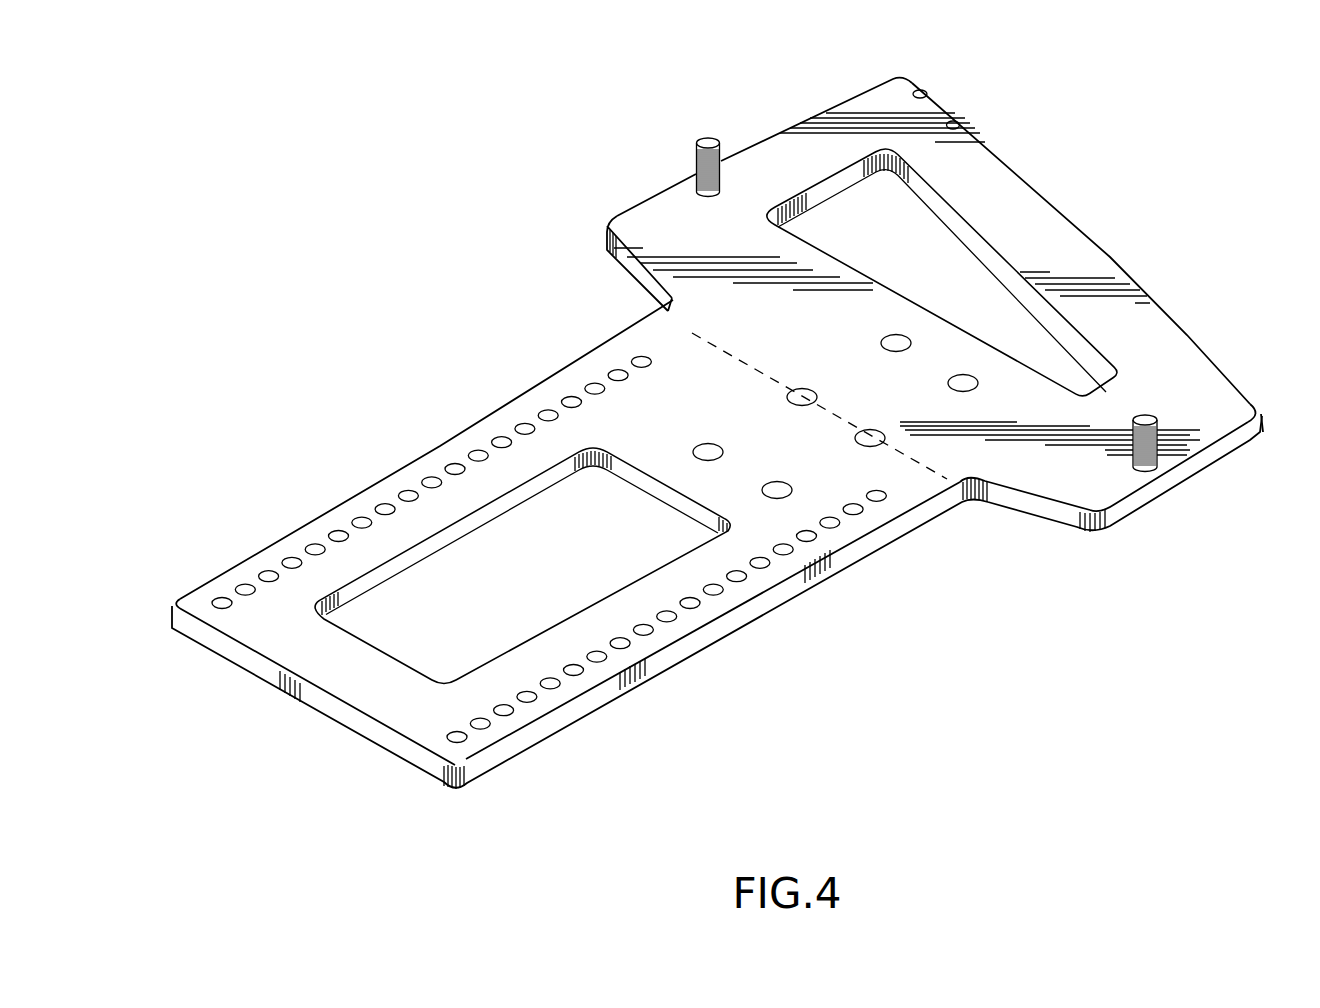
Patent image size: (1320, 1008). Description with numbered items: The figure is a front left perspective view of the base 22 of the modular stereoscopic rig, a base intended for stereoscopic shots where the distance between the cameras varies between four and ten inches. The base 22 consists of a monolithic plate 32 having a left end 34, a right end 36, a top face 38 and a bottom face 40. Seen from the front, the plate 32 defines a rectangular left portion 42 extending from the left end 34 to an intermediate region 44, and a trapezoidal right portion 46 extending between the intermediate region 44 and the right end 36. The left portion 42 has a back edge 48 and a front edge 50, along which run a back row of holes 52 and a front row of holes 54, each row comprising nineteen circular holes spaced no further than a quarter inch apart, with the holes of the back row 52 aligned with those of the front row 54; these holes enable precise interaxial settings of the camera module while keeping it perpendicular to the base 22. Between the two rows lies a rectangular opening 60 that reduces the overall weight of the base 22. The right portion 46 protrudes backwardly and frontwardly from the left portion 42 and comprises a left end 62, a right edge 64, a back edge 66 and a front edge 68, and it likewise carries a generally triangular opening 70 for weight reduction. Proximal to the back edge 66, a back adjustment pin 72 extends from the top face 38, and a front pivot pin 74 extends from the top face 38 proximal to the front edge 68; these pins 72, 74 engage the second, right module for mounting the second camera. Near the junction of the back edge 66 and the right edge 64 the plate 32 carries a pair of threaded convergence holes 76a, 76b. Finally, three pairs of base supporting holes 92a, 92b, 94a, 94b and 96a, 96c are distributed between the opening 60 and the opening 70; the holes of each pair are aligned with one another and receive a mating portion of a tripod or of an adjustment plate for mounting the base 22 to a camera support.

The base 22 is at (346, 218).
The monolithic plate 32 is at (696, 377).
The left end 34 is at (268, 701).
The right end 36 is at (1178, 297).
The top face 38 is at (1174, 360).
The bottom face 40 is at (972, 458).
The left portion 42 is at (411, 528).
The intermediate region 44 is at (929, 461).
The right portion 46 is at (801, 158).
The back edge 48 is at (461, 435).
The front edge 50 is at (693, 640).
The back row of holes 52 is at (226, 593).
The front row of holes 54 is at (492, 729).
The opening 60 is at (537, 533).
The left end 62 is at (690, 333).
The right edge 64 is at (1110, 257).
The back edge 66 is at (744, 142).
The front edge 68 is at (1142, 498).
The opening 70 is at (920, 233).
The back adjustment pin 72 is at (690, 165).
The front pivot pin 74 is at (1162, 425).
The threaded convergence hole 76a is at (925, 90).
The threaded convergence hole 76b is at (958, 120).
The base supporting hole 92a is at (712, 446).
The base supporting hole 92b is at (780, 489).
The base supporting hole 94a is at (803, 385).
The base supporting hole 94b is at (871, 428).
The base supporting hole 96a is at (897, 336).
The third locating hole 96c is at (961, 375).